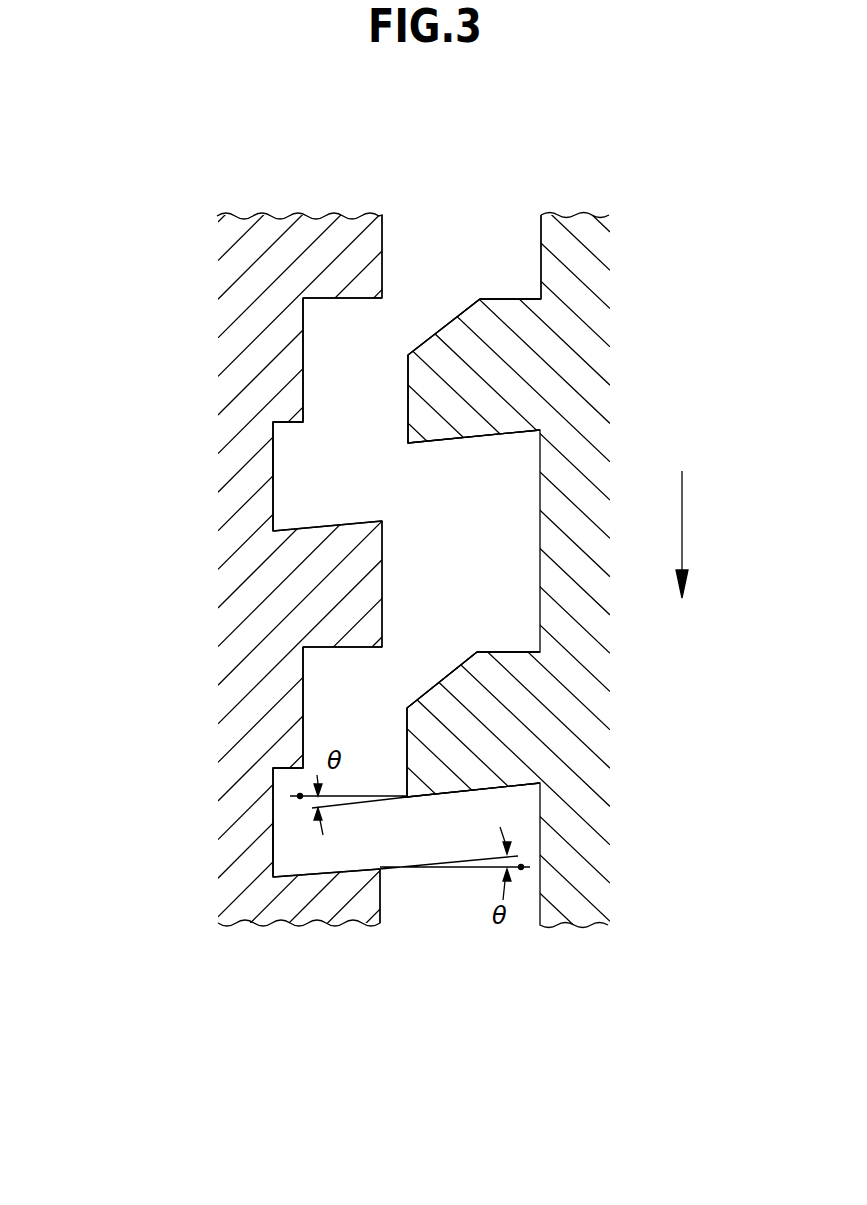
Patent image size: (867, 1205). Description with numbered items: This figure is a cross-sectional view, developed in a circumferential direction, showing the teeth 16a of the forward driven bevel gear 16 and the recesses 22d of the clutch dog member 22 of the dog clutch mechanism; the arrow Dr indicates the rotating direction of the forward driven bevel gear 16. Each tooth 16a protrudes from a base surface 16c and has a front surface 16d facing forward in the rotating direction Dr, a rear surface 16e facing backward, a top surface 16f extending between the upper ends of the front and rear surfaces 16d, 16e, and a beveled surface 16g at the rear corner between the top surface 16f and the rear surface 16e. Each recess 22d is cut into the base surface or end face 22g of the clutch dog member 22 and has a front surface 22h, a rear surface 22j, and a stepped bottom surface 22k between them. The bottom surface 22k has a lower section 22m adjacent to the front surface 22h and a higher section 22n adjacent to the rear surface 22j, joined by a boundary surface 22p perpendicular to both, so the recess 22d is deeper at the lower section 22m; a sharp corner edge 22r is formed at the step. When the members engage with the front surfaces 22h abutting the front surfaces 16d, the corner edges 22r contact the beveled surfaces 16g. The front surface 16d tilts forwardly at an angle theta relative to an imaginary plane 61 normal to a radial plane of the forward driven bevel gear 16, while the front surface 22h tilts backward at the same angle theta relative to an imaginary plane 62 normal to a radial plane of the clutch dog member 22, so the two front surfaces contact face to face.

The clutch dog member 22 is at (297, 203).
The forward driven bevel gear 16 is at (573, 203).
The base surface (end face) of the clutch dog member 22g is at (400, 225).
The base surface of the forward driven bevel gear 16c is at (540, 253).
The tooth 16a is at (480, 299).
The rear inner surface of the recess 22j is at (353, 299).
The bottom surface of the recess 22k is at (120, 350).
The higher section of the bottom surface 22n is at (303, 366).
The corner edge 22r is at (303, 419).
The boundary surface 22p is at (273, 434).
The lower section of the bottom surface 22m is at (273, 466).
The recess 22d is at (278, 527).
The front inner surface of the recess 22h is at (313, 472).
The rear surface of the tooth 16e is at (512, 299).
The beveled surface 16g is at (440, 322).
The top surface of the tooth 16f is at (408, 400).
The front surface of the tooth 16d is at (495, 447).
The imaginary plane 61 is at (300, 798).
The imaginary plane 62 is at (521, 867).
The rotating direction Dr is at (696, 534).